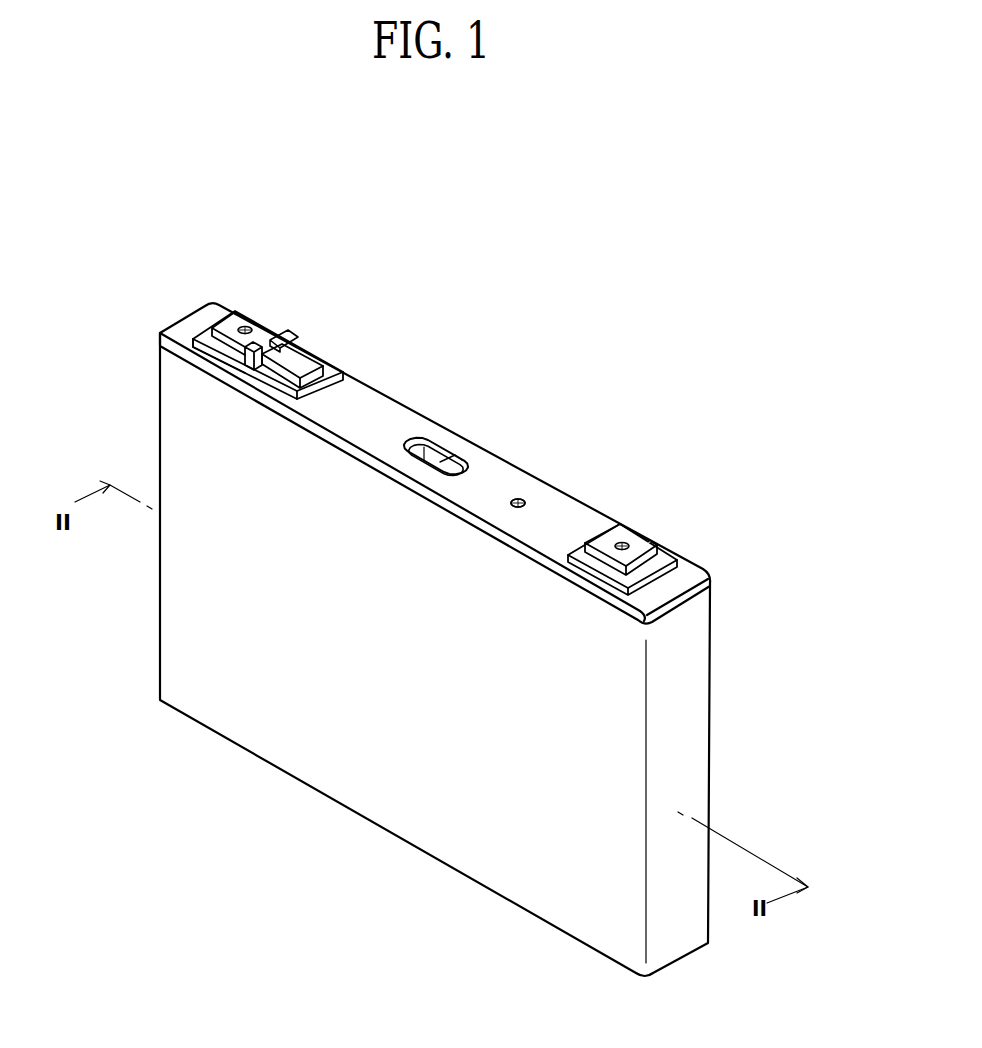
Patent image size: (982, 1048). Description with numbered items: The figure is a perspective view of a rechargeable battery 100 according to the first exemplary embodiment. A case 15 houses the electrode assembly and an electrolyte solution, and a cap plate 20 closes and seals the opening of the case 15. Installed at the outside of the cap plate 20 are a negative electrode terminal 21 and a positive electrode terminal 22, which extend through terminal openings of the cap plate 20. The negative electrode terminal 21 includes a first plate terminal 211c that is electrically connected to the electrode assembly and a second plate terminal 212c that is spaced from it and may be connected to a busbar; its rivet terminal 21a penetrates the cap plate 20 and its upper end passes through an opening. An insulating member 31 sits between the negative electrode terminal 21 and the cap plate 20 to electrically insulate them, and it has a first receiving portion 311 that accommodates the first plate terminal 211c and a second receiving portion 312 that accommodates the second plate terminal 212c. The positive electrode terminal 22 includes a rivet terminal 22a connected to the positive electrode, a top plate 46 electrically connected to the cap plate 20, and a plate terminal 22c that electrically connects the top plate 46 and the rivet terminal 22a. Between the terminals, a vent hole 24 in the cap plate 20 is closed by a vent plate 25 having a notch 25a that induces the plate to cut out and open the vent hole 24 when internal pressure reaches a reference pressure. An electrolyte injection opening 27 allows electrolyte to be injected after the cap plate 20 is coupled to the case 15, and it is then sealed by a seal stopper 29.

The rechargeable battery 100 is at (514, 285).
The case 15 is at (390, 773).
The cap plate 20 is at (355, 400).
The negative electrode terminal 21 is at (226, 305).
The rivet terminal 21a is at (247, 325).
The first plate terminal 211c is at (263, 333).
The second plate terminal 212c is at (300, 357).
The positive electrode terminal 22 is at (611, 514).
The rivet terminal 22a is at (625, 542).
The plate terminal 22c is at (640, 548).
The vent hole 24 is at (422, 440).
The vent plate 25 is at (436, 453).
The notch 25a is at (455, 455).
The electrolyte injection opening 27 is at (522, 499).
The seal stopper 29 is at (514, 499).
The insulating member 31 is at (190, 324).
The first receiving portion 311 is at (213, 348).
The second receiving portion 312 is at (273, 378).
The top plate 46 is at (665, 553).